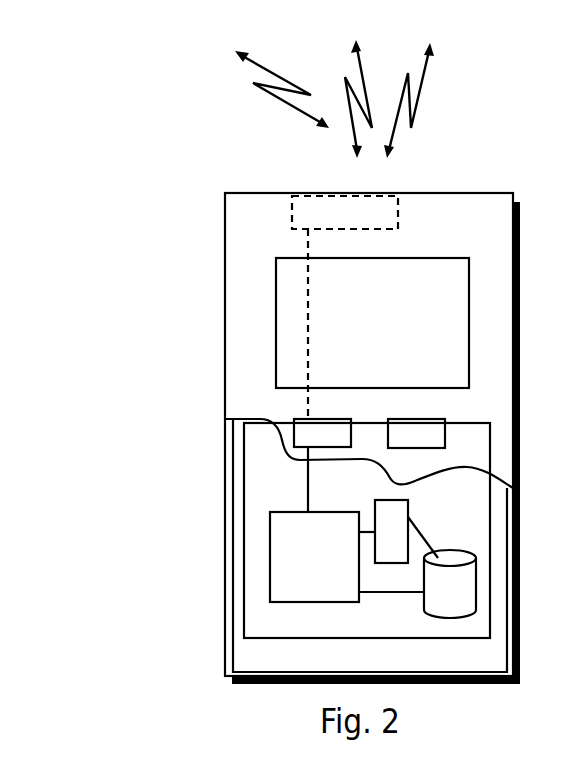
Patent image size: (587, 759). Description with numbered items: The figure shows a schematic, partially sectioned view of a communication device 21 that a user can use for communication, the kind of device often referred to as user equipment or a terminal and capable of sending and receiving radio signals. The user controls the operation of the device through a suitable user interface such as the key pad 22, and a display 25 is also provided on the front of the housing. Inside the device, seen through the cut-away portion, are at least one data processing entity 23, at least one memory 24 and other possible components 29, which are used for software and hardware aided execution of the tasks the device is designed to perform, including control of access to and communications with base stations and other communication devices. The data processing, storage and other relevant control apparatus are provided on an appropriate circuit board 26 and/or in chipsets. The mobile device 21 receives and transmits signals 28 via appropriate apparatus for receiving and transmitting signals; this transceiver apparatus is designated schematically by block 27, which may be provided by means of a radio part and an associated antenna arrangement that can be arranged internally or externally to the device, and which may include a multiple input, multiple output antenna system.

The communication device 21 is at (227, 235).
The key pad 22 is at (298, 433).
The data processing entity 23 is at (270, 542).
The memory 24 is at (443, 595).
The display 25 is at (292, 311).
The circuit board 26 is at (268, 620).
The transceiver apparatus 27 is at (299, 193).
The signals 28 is at (442, 115).
The other components 29 is at (392, 517).